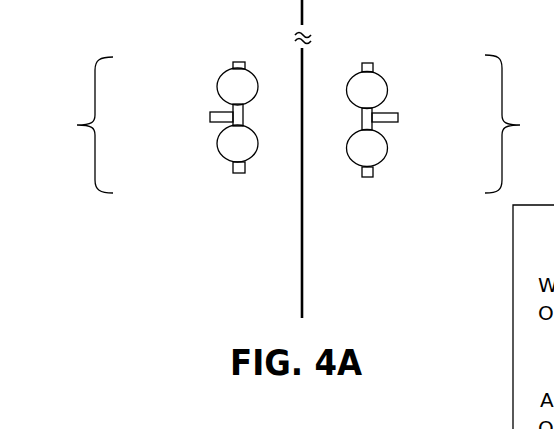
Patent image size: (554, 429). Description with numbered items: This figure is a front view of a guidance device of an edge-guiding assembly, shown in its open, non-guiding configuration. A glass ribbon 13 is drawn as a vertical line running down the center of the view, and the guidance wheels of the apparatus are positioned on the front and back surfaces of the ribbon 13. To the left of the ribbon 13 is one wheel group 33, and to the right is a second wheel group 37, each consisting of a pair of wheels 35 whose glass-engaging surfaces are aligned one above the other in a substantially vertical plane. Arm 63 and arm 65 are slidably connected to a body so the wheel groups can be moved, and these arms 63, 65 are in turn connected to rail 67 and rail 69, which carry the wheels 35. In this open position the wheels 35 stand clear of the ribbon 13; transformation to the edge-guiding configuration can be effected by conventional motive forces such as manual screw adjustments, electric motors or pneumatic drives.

The ribbon 13 is at (295, 243).
The edge-guiding apparatus (first side) 33 is at (238, 131).
The wheels 35 is at (232, 78).
The edge-guiding apparatus (second side) 37 is at (458, 153).
The arm 63 is at (229, 118).
The arm 65 is at (398, 120).
The rail 67 is at (238, 178).
The rail 69 is at (365, 180).